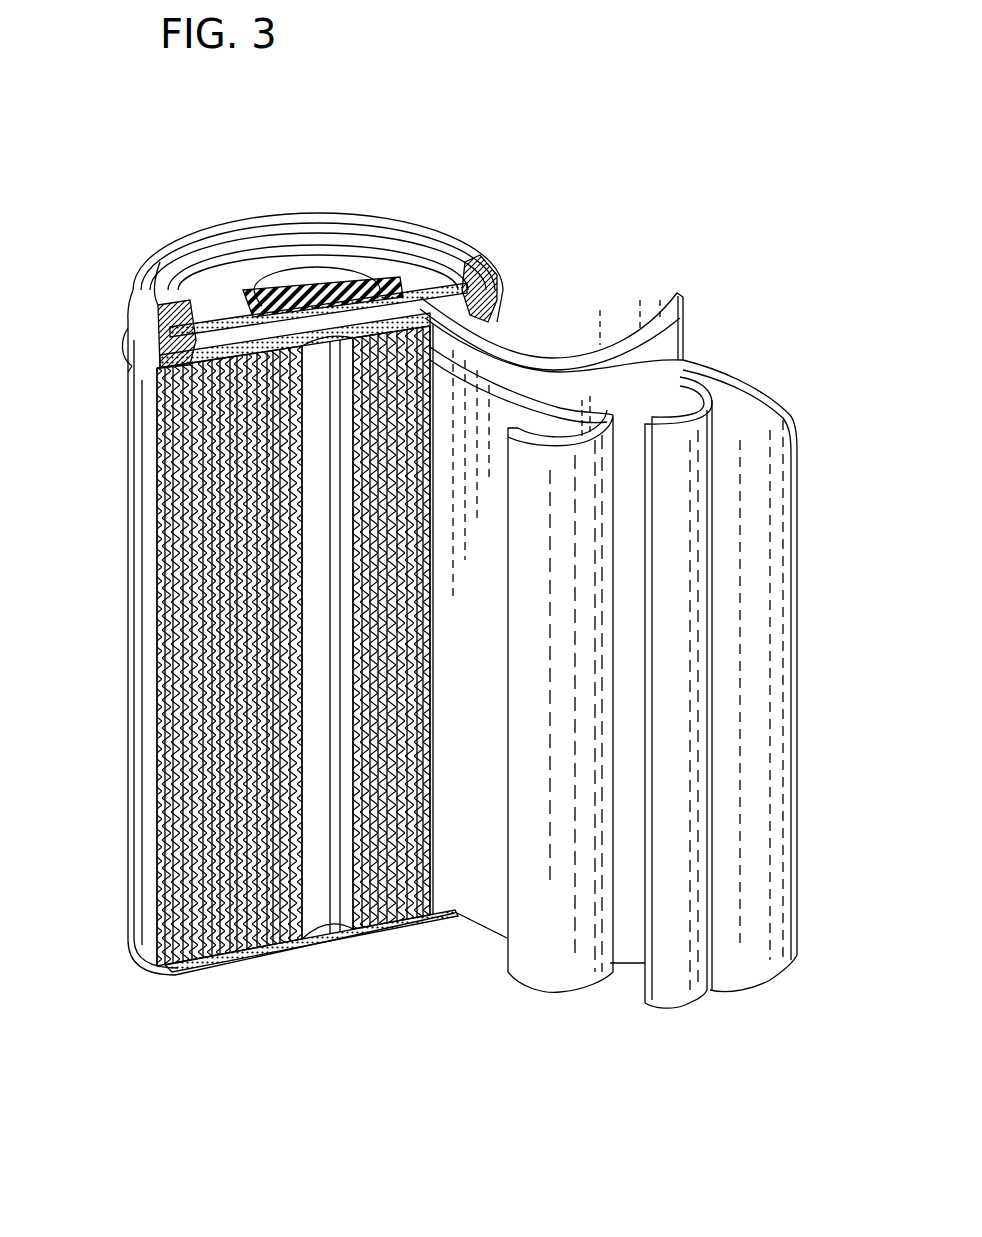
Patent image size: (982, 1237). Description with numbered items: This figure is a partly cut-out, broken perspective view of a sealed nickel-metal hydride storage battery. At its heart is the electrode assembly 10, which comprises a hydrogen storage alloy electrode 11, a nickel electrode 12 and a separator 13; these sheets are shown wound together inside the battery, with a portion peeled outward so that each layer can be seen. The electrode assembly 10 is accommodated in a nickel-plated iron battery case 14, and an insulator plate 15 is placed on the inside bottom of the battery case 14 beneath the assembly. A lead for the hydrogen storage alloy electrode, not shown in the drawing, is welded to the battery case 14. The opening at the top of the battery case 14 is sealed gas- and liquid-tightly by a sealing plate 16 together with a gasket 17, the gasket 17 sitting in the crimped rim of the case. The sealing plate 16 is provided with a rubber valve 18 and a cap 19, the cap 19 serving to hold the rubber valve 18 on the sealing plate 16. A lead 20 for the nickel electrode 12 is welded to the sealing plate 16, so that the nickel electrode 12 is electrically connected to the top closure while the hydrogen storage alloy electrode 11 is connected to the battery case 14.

The electrode assembly 10 is at (806, 407).
The hydrogen storage alloy electrode 11 is at (780, 567).
The nickel electrode 12 is at (590, 852).
The separator 13 is at (690, 697).
The battery case 14 is at (136, 696).
The insulator plate 15 is at (290, 955).
The sealing plate 16 is at (462, 266).
The gasket 17 is at (136, 300).
The rubber valve 18 is at (316, 288).
The cap 19 is at (282, 275).
The lead 20 is at (148, 364).